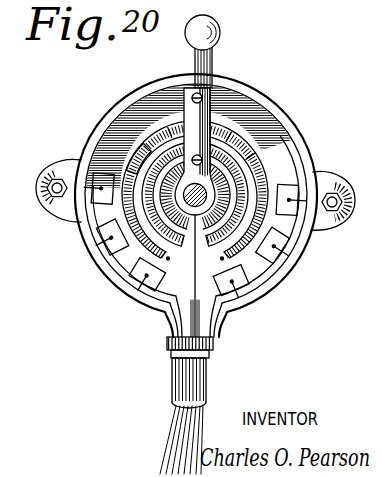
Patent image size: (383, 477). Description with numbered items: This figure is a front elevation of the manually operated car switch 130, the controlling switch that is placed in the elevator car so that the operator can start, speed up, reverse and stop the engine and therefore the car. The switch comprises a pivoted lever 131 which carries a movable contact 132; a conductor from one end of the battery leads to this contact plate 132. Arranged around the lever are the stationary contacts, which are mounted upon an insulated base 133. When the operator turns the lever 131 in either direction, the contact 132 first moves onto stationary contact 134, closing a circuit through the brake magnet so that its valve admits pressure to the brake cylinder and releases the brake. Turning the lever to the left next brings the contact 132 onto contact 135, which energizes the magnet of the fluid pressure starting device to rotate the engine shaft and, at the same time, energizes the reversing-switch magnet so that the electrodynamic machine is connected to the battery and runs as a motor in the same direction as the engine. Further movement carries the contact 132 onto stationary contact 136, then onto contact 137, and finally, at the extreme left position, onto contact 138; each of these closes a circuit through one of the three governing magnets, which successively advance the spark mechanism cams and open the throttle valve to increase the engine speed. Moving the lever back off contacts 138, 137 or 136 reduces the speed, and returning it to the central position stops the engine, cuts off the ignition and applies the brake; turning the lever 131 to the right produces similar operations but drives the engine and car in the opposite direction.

The manually operated car switch 130 is at (276, 94).
The pivoted lever 131 is at (214, 126).
The movable contact 132 is at (153, 88).
The insulated base 133 is at (286, 162).
The stationary contact 134 is at (223, 223).
The stationary contact 135 is at (137, 160).
The stationary contact 136 is at (93, 185).
The stationary contact 137 is at (105, 226).
The stationary contact 138 is at (141, 275).